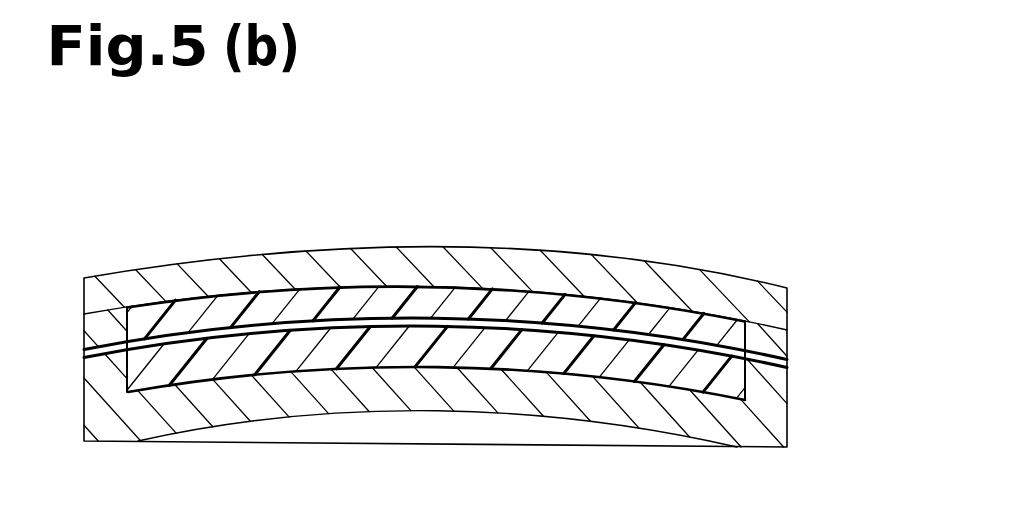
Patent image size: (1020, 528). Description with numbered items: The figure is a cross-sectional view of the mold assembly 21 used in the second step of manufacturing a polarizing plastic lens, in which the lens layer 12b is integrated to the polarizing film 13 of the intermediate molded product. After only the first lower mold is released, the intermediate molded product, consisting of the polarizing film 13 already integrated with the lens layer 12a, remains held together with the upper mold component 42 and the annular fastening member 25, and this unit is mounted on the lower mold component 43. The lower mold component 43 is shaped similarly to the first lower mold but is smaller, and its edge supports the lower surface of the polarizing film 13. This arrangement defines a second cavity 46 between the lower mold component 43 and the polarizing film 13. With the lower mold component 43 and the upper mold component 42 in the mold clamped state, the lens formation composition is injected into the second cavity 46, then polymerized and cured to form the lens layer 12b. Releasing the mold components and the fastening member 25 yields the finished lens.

The mold assembly 21 is at (533, 173).
The upper mold component 42 is at (680, 273).
The lower mold component 43 is at (658, 420).
The fastening member 25 is at (107, 323).
The lens layer 12a is at (232, 300).
The lens layer 12b is at (203, 368).
The polarizing film 13 is at (792, 365).
The second cavity 46 is at (398, 362).